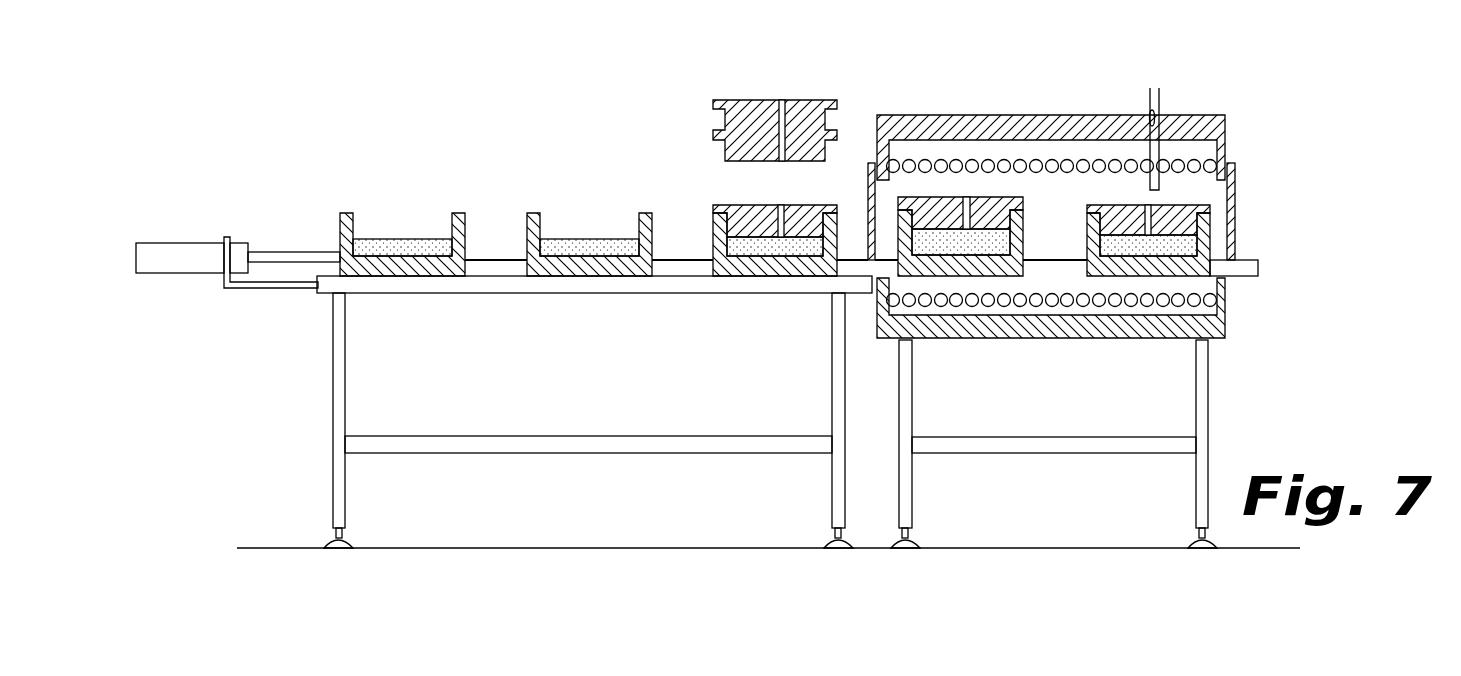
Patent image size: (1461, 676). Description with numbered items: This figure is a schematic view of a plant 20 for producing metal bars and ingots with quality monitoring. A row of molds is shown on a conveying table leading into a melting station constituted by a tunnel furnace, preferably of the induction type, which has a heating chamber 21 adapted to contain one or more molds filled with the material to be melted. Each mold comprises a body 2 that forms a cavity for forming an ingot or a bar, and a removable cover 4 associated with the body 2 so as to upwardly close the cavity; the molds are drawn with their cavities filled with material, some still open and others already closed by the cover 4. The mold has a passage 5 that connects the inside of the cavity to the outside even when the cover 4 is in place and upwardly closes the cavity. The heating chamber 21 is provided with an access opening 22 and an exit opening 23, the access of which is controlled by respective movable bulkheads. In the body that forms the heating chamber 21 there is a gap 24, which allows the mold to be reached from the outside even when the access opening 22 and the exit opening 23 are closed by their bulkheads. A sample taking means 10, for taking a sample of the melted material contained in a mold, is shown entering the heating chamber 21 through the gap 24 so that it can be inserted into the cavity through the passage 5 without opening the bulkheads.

The body 2 is at (346, 213).
The removable cover 4 is at (745, 110).
The passage 5 is at (782, 100).
The sample taking means 10 is at (1162, 88).
The plant 20 is at (1139, 187).
The heating chamber 21 is at (1052, 193).
The access opening 22 is at (886, 198).
The exit opening 23 is at (1217, 208).
The gap 24 is at (1150, 120).